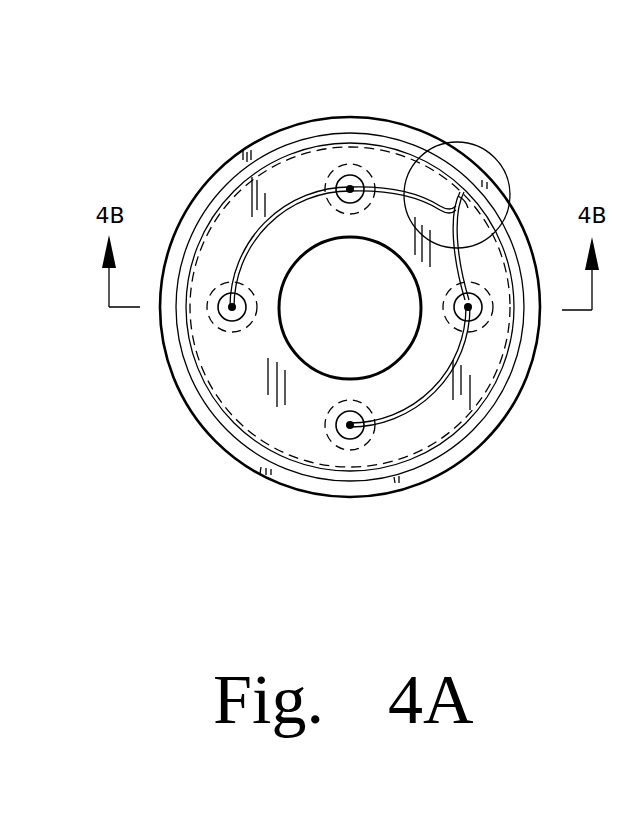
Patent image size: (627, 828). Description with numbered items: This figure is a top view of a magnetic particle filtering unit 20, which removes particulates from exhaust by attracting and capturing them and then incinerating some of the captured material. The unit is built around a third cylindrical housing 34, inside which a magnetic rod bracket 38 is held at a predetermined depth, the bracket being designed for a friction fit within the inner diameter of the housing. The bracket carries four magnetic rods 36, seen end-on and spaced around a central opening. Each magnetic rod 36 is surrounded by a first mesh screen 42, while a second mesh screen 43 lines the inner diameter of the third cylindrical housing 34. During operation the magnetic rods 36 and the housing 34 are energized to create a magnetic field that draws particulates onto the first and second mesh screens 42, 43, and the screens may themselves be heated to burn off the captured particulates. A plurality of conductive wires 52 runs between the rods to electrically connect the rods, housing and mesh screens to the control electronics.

The magnetic particle filtering unit 20 is at (182, 146).
The third cylindrical housing 34 is at (403, 124).
The magnetic rod 36 is at (334, 174).
The magnetic rod bracket 38 is at (258, 378).
The first mesh screen 42 is at (348, 186).
The second mesh screen 43 is at (433, 452).
The conductive wires 52 is at (508, 186).